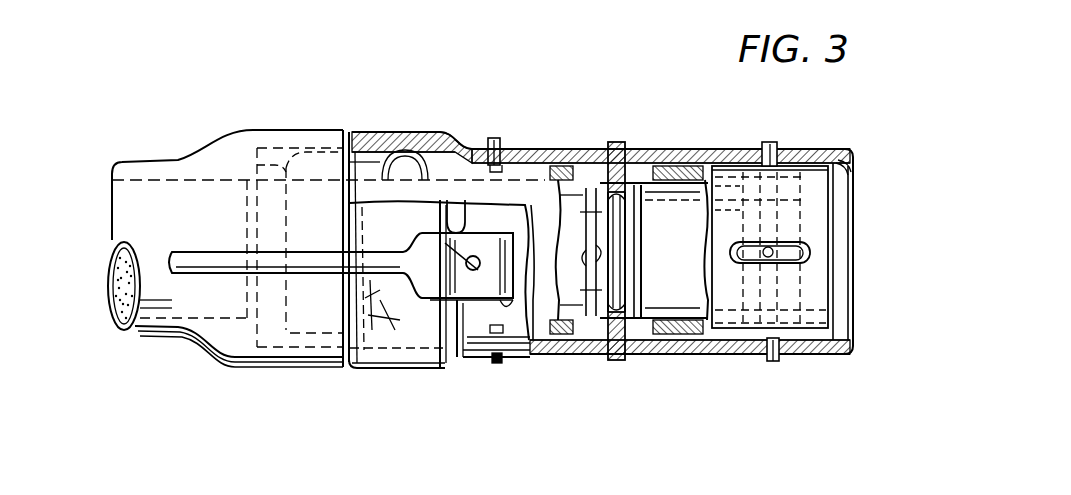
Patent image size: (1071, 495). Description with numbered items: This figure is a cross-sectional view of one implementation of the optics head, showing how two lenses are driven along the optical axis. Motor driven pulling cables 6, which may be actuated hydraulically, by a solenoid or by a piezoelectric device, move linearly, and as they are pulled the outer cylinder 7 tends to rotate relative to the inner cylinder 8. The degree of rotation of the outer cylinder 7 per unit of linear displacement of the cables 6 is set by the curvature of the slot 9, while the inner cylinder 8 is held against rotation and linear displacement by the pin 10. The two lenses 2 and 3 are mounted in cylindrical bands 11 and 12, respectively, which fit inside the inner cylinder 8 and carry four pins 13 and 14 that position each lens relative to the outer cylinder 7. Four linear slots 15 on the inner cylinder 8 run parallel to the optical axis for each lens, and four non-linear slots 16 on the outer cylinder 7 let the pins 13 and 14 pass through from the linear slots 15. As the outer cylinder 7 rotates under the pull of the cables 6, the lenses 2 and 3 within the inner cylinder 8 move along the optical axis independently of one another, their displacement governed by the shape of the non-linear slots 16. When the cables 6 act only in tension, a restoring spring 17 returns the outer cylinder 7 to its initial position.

The lens 2 is at (833, 198).
The lens 3 is at (618, 218).
The pulling cables 6 is at (204, 258).
The outer cylinder 7 is at (827, 149).
The inner cylinder 8 is at (817, 300).
The slot 9 is at (433, 304).
The pin 10 is at (493, 138).
The cylindrical band 11 is at (745, 186).
The cylindrical band 12 is at (640, 310).
The pins 13 is at (632, 146).
The pins 14 is at (773, 147).
The slots 15 is at (635, 147).
The non-linear slots 16 is at (566, 150).
The restoring spring 17 is at (428, 133).